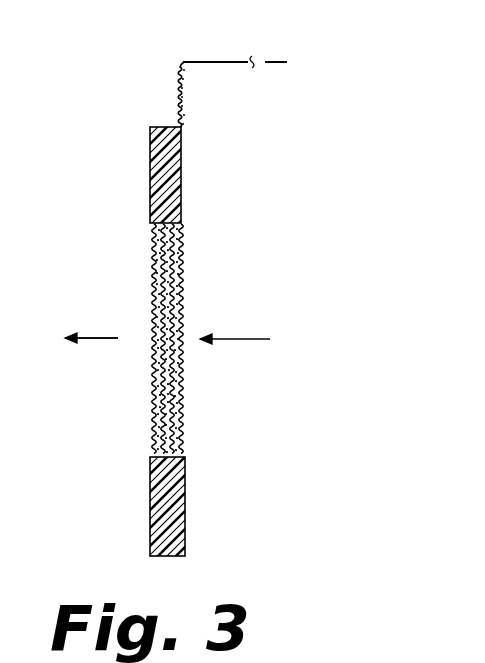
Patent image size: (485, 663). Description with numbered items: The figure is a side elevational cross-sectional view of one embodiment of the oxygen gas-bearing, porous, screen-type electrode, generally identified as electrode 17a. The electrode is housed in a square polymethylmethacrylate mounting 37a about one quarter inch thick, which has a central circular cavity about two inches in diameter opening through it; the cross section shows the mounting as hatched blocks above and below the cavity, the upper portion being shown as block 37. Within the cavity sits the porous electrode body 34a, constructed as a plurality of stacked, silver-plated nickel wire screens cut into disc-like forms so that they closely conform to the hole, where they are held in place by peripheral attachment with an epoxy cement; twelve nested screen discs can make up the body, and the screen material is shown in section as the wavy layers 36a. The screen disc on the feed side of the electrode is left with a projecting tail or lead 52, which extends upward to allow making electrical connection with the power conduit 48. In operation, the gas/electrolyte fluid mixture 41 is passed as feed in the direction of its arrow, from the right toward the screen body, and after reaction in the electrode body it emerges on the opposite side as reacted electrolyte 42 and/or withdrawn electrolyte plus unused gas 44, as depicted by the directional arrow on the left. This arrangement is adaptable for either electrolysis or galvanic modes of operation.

The screen-type electrode 17a is at (156, 118).
The upper frame block 37 is at (178, 189).
The polymethylmethacrylate mounting 37a is at (183, 501).
The fibrous layer 36a is at (151, 362).
The porous electrode body 34a is at (185, 383).
The projecting tail or lead 52 is at (181, 118).
The power conduit 48 is at (219, 61).
The gas/electrolyte fluid mixture 41 is at (250, 339).
The reacted electrolyte 42 is at (97, 338).
The withdrawn electrolyte plus unused gas 44 is at (68, 313).